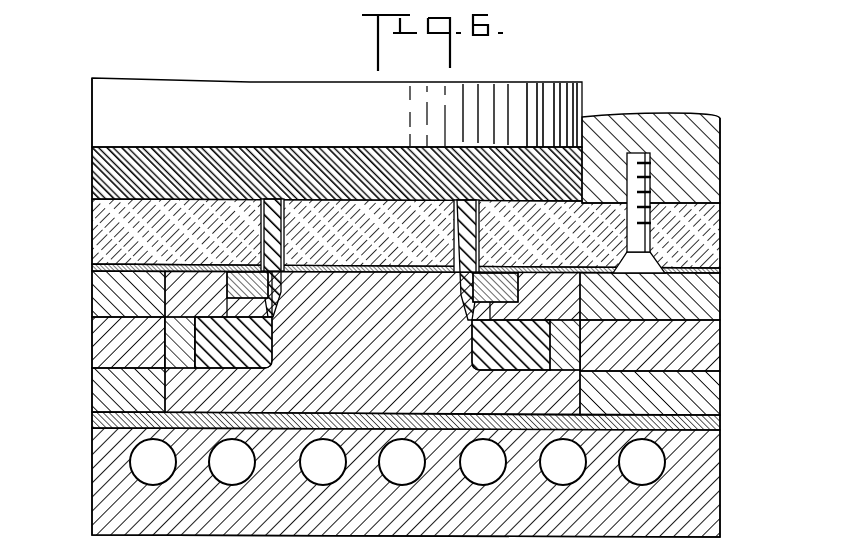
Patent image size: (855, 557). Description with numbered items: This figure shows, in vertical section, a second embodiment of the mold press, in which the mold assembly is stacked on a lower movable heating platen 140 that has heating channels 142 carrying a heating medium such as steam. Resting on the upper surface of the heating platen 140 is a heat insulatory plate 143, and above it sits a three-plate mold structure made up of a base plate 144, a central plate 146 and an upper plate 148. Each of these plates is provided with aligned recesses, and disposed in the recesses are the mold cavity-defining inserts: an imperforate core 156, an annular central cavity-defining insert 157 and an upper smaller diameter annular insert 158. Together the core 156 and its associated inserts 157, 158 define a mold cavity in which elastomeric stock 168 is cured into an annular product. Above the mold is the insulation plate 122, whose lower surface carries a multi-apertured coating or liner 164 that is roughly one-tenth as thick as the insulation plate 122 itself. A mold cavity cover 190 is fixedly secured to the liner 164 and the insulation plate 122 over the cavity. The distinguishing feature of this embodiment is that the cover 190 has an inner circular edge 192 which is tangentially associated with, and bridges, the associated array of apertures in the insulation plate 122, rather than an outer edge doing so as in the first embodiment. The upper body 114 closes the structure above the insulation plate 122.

The upper body 114 is at (562, 100).
The insulation plate 122 is at (702, 239).
The lower movable heating platen 140 is at (700, 481).
The heating channels 142 is at (131, 459).
The heat insulatory plate 143 is at (712, 424).
The base plate 144 is at (705, 395).
The central plate 146 is at (703, 349).
The upper plate 148 is at (700, 300).
The imperforate core 156 is at (400, 383).
The annular central cavity-defining insert 157 is at (563, 347).
The upper smaller diameter annular insert 158 is at (556, 294).
The multi-apertured coating or liner 164 is at (92, 268).
The elastomeric stock 168 is at (100, 165).
The mold cavity cover 190 is at (508, 278).
The inner circular edge 192 is at (278, 284).